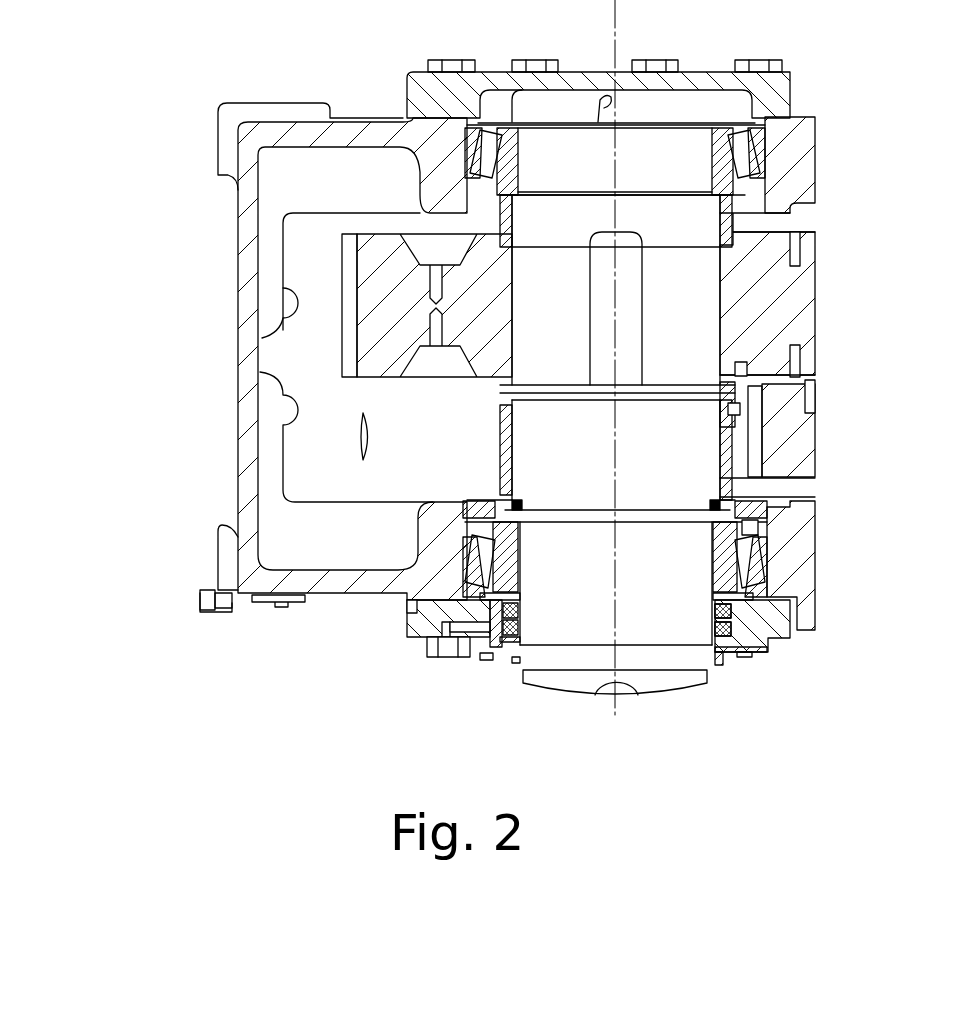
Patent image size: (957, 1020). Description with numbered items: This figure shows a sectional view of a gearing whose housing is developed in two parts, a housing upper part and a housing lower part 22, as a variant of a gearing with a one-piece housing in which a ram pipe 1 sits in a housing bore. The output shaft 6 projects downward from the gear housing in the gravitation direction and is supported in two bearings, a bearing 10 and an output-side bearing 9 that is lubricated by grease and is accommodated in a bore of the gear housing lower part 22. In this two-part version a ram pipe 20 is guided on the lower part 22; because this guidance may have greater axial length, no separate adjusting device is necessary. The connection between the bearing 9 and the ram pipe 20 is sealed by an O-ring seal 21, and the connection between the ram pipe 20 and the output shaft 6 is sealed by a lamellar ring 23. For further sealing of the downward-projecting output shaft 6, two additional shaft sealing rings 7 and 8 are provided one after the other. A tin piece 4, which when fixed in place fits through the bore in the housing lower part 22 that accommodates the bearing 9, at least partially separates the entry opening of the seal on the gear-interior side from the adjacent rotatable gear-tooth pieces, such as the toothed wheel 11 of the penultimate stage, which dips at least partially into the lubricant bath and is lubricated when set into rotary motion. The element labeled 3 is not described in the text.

The ram pipe 1 is at (727, 470).
The retaining ring 3 is at (735, 405).
The tin piece 4 is at (737, 418).
The output shaft 6 is at (643, 573).
The shaft sealing ring 7 is at (730, 612).
The shaft sealing ring 8 is at (770, 645).
The bearing 9 is at (748, 565).
The bearing 10 is at (745, 155).
The toothed wheel 11 is at (798, 445).
The ram pipe 20 is at (468, 560).
The O-ring seal 21 is at (745, 365).
The lower part of the gear housing 22 is at (435, 565).
The lamellar ring 23 is at (545, 500).